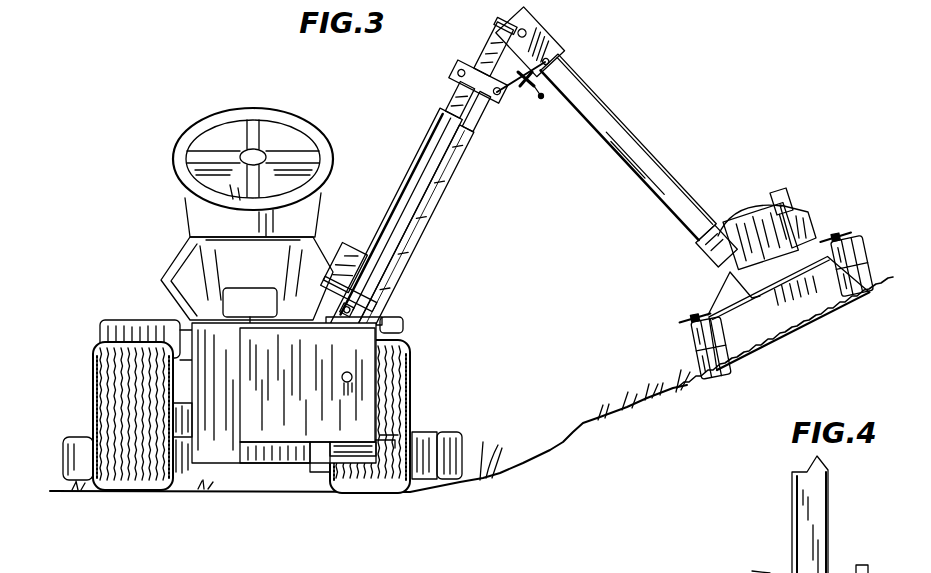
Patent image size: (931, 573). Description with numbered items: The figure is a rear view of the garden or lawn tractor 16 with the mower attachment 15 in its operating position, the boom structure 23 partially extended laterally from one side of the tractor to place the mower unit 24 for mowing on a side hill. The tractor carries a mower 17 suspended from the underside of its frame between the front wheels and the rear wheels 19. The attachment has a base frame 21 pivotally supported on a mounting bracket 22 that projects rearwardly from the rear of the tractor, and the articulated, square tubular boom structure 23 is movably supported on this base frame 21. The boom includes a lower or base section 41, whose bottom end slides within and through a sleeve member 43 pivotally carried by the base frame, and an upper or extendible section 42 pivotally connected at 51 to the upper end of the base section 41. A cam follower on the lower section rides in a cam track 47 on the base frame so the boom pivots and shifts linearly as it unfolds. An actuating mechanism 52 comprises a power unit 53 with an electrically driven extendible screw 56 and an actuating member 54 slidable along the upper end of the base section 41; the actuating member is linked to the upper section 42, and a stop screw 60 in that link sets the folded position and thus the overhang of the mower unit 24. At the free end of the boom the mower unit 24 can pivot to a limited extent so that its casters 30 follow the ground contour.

In FIG. 3, the mower attachment 15 is at (415, 132).
In FIG. 3, the garden or lawn tractor 16 is at (150, 232).
In FIG. 3, the mower 17 is at (460, 432).
In FIG. 3, the rear wheels 19 is at (93, 372).
In FIG. 3, the base frame 21 is at (285, 462).
In FIG. 3, the mounting bracket 22 is at (218, 458).
In FIG. 3, the boom structure 23 is at (646, 120).
In FIG. 3, the mower unit 24 is at (742, 208).
In FIG. 3, the casters 30 is at (722, 371).
In FIG. 3, the lower or base section 41 is at (413, 233).
In FIG. 4, the lower or base section 41 is at (812, 500).
In FIG. 3, the upper or extendible section 42 is at (634, 164).
In FIG. 4, the sleeve member 43 is at (840, 572).
In FIG. 4, the cam track 47 is at (748, 569).
In FIG. 3, the pivotal connection 51 is at (530, 42).
In FIG. 3, the actuating mechanism 52 is at (387, 216).
In FIG. 3, the power unit 53 is at (494, 47).
In FIG. 3, the actuating member 54 is at (467, 106).
In FIG. 3, the screw 56 is at (478, 81).
In FIG. 3, the stop screw 60 is at (541, 98).